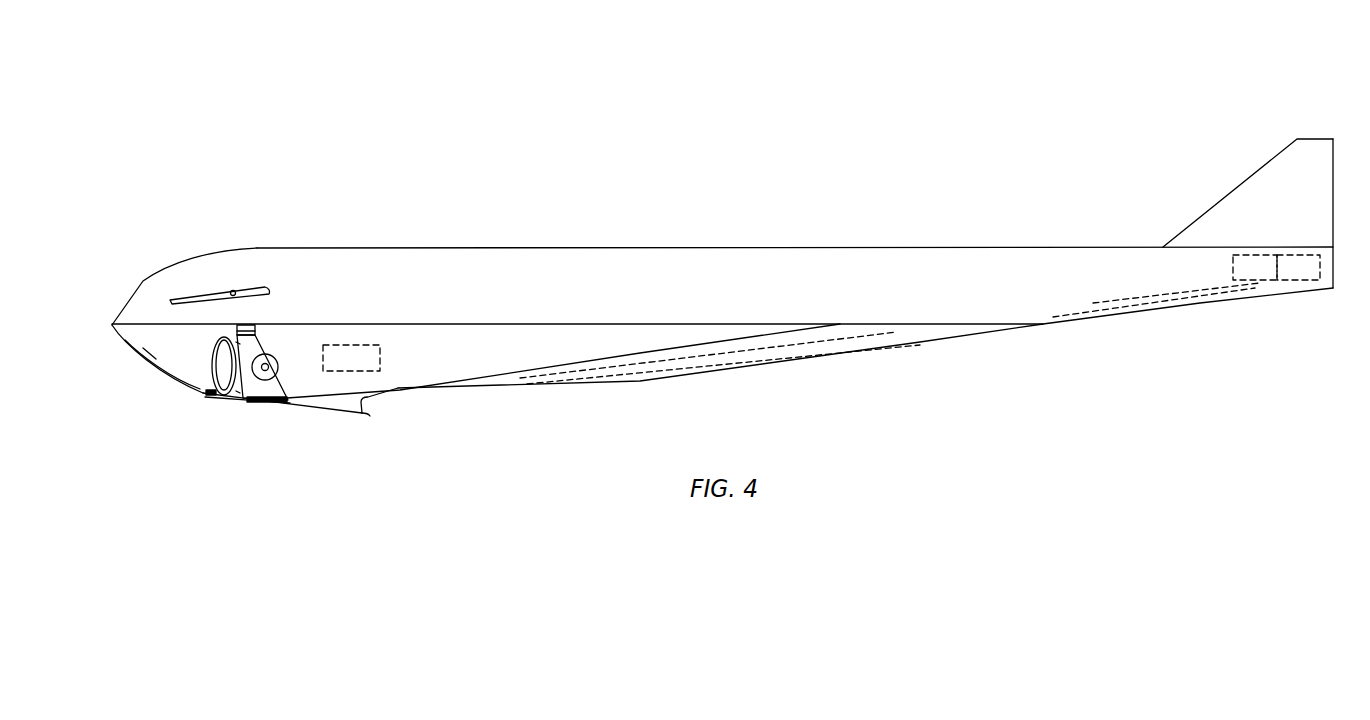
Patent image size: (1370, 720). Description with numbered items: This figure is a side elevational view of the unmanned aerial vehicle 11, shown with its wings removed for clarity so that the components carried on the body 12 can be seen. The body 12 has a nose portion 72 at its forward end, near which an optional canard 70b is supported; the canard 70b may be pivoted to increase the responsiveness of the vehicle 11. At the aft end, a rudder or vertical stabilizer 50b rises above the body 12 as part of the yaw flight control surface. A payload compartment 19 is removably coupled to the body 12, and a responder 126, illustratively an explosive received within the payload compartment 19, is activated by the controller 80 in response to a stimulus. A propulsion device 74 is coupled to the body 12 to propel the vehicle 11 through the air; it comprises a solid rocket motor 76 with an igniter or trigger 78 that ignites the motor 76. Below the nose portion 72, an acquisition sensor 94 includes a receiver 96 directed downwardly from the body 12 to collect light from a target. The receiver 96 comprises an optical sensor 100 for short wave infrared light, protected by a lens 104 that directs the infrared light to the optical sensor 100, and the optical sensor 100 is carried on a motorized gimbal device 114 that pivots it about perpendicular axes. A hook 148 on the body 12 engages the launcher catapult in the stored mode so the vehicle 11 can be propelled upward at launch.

The unmanned aerial vehicle 11 is at (296, 84).
The body 12 is at (400, 256).
The payload compartment 19 is at (770, 358).
The second rudder or vertical stabilizer 50b is at (1305, 155).
The canard 70b is at (243, 287).
The nose portion 72 is at (263, 318).
The propulsion device 74 is at (1277, 296).
The solid rocket motor 76 is at (1248, 288).
The igniter or trigger 78 is at (1295, 283).
The controller 80 is at (340, 377).
The acquisition sensor 94 is at (246, 406).
The receiver 96 is at (203, 396).
The optical sensor 100 is at (240, 394).
The lens 104 is at (151, 374).
The gimbal device 114 is at (262, 395).
The responder 126 is at (617, 380).
The hook 148 is at (370, 415).